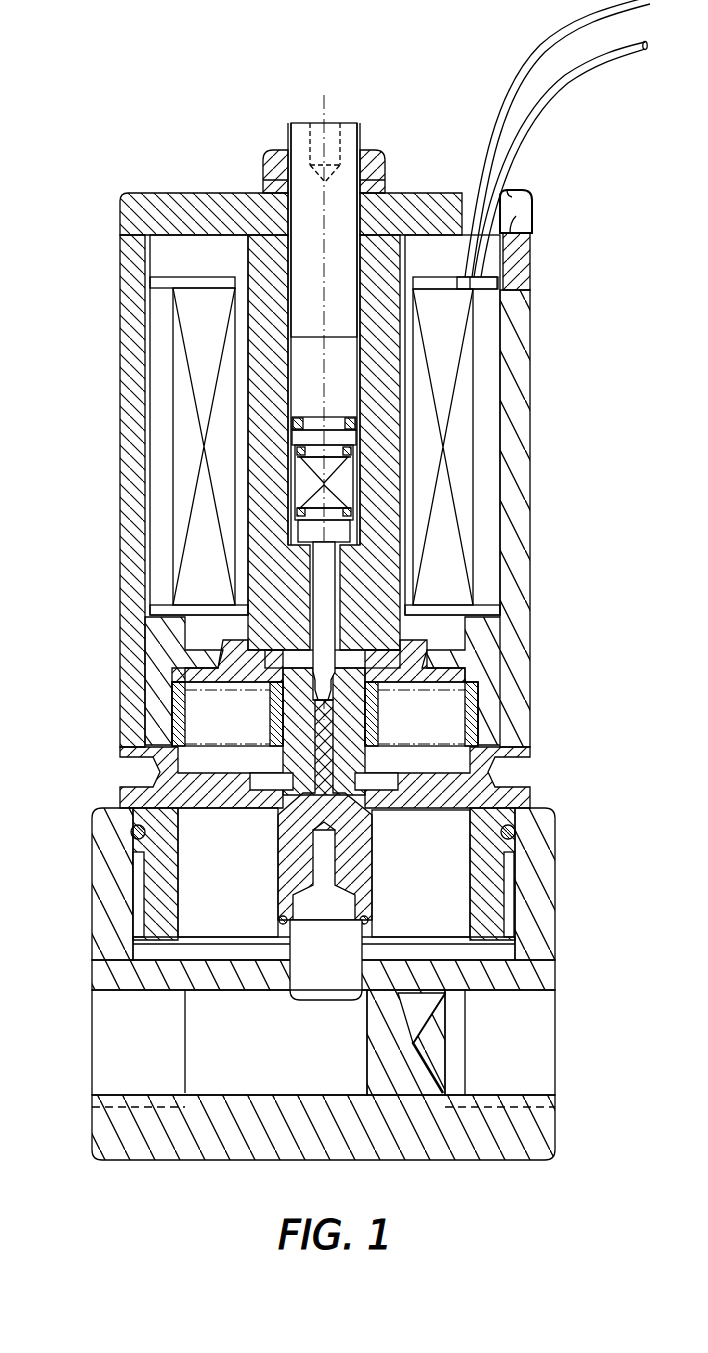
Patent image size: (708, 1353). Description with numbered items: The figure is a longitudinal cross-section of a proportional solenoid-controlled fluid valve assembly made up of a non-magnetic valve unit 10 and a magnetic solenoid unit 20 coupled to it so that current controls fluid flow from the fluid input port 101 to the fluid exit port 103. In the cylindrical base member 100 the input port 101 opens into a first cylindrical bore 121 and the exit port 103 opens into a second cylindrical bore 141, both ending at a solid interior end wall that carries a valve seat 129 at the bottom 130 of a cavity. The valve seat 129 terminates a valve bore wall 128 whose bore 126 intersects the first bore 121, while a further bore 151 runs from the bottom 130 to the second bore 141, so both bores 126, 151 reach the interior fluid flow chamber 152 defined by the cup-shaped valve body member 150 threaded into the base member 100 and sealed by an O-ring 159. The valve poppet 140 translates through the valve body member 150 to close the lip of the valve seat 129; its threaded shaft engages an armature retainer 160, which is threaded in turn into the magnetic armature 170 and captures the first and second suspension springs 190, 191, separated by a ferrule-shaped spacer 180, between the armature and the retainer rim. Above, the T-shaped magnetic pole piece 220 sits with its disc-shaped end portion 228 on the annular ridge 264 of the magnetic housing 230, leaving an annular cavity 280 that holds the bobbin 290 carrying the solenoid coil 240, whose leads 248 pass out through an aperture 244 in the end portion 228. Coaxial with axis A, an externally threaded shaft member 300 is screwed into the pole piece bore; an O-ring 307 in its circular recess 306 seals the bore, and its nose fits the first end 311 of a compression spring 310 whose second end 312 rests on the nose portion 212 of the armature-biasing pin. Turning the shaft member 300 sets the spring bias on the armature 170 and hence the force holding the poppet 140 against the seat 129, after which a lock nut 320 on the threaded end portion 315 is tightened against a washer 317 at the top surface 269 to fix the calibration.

The valve unit 10 is at (515, 1177).
The solenoid unit 20 is at (552, 528).
The base member 100 is at (555, 870).
The fluid input port 101 is at (92, 1052).
The fluid exit port 103 is at (555, 1050).
The first cylindrical bore 121 is at (229, 1042).
The cylindrical bore 126 is at (292, 978).
The valve bore wall 128 is at (292, 942).
The valve seat 129 is at (360, 920).
The bottom of cavity 130 is at (216, 945).
The valve poppet 140 is at (378, 855).
The second cylindrical bore 141 is at (500, 1042).
The valve body member 150 is at (530, 805).
The cylindrical bore 151 is at (446, 972).
The interior fluid flow chamber 152 is at (228, 872).
The O-ring 159 is at (516, 838).
The armature retainer 160 is at (385, 800).
The magnetic armature 170 is at (372, 692).
The spacer 180 is at (372, 730).
The first suspension spring 190 is at (400, 663).
The second suspension spring 191 is at (262, 745).
The nose portion of armature-biasing pin 212 is at (345, 545).
The magnetic pole piece 220 is at (248, 260).
The disc-shaped end portion 228 is at (166, 193).
The magnetic housing 230 is at (530, 300).
The solenoid coil 240 is at (176, 452).
The aperture 244 is at (503, 200).
The lead wires 248 is at (658, 62).
The annular ridge 264 is at (514, 230).
The top surface 269 is at (230, 193).
The annular cavity 280 is at (495, 398).
The bobbin 290 is at (445, 605).
The shaft member 300 is at (356, 128).
The circular recess 306 is at (306, 417).
The O-ring 307 is at (347, 430).
The compression spring 310 is at (305, 490).
The first end of compression spring 311 is at (305, 480).
The second end of compression spring 312 is at (350, 513).
The externally threaded end portion 315 is at (292, 137).
The washer 317 is at (386, 186).
The lock nut 320 is at (366, 156).
The axis A is at (322, 100).